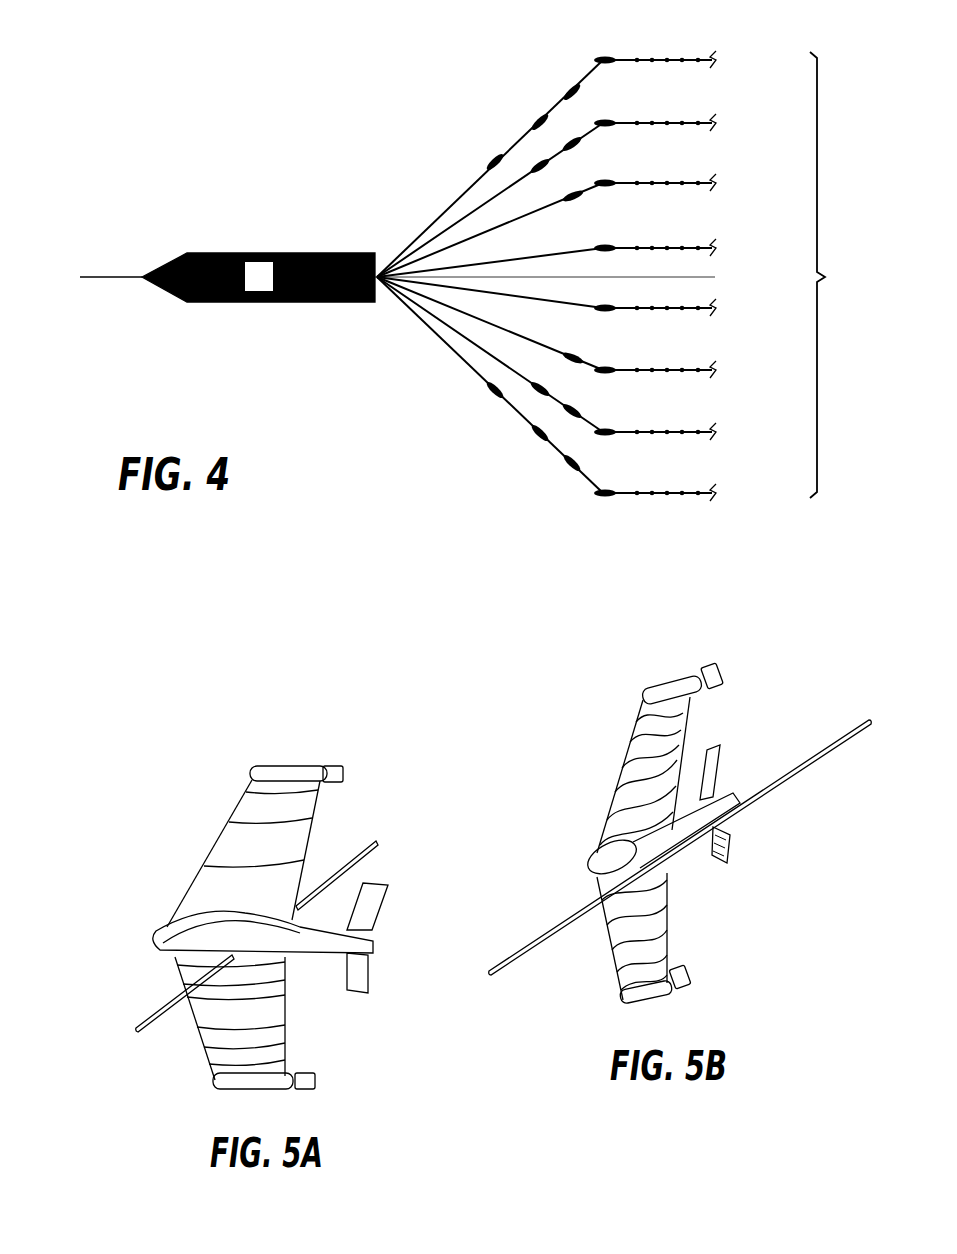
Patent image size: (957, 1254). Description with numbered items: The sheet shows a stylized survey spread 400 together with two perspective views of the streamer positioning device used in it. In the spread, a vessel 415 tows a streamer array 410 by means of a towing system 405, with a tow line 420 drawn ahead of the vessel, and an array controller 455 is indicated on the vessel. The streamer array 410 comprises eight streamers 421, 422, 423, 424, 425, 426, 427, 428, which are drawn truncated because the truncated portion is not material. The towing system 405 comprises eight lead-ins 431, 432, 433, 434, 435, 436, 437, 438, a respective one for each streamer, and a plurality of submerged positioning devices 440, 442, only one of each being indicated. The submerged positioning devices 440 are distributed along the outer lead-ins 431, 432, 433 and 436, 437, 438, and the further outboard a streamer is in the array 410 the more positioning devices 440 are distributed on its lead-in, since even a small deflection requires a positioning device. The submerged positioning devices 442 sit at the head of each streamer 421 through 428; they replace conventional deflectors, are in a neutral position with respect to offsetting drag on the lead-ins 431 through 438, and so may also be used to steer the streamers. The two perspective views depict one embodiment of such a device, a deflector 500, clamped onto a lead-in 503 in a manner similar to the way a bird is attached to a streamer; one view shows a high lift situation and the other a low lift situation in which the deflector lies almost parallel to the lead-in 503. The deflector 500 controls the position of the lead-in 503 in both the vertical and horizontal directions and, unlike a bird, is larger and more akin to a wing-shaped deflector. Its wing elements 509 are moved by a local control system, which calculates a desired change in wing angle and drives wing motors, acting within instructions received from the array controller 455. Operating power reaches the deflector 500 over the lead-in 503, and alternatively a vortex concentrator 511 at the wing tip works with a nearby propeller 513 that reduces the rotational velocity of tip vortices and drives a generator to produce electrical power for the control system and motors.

In FIG. 4, the survey spread 400 is at (142, 137).
In FIG. 4, the towing system 405 is at (400, 123).
In FIG. 4, the streamer array 410 is at (843, 275).
In FIG. 4, the vessel 415 is at (200, 302).
In FIG. 4, the tow cable 420 is at (130, 272).
In FIG. 4, the streamer 421 is at (713, 52).
In FIG. 4, the streamer 422 is at (713, 115).
In FIG. 4, the streamer 423 is at (713, 175).
In FIG. 4, the streamer 424 is at (713, 240).
In FIG. 4, the streamer 425 is at (713, 318).
In FIG. 4, the streamer 426 is at (713, 380).
In FIG. 4, the streamer 427 is at (713, 442).
In FIG. 4, the streamer 428 is at (713, 503).
In FIG. 4, the lead-in 431 is at (440, 213).
In FIG. 4, the lead-in 432 is at (430, 237).
In FIG. 4, the lead-in 433 is at (420, 258).
In FIG. 4, the lead-in 434 is at (410, 272).
In FIG. 4, the lead-in 435 is at (410, 283).
In FIG. 4, the lead-in 436 is at (420, 297).
In FIG. 4, the lead-in 437 is at (430, 316).
In FIG. 4, the lead-in 438 is at (440, 338).
In FIG. 4, the submerged positioning device 440 is at (535, 119).
In FIG. 4, the submerged positioning device 442 is at (600, 56).
In FIG. 4, the array controller 455 is at (258, 262).
In FIG. 5A, the deflector 500 is at (166, 779).
In FIG. 5B, the deflector 500 is at (550, 757).
In FIG. 5A, the lead-in 503 is at (160, 1005).
In FIG. 5B, the lead-in 503 is at (543, 935).
In FIG. 5A, the wing element 509 is at (212, 845).
In FIG. 5B, the wing element 509 is at (632, 740).
In FIG. 5A, the vortex concentrator 511 is at (262, 766).
In FIG. 5B, the vortex concentrator 511 is at (660, 682).
In FIG. 5A, the propeller 513 is at (345, 775).
In FIG. 5B, the propeller 513 is at (725, 670).